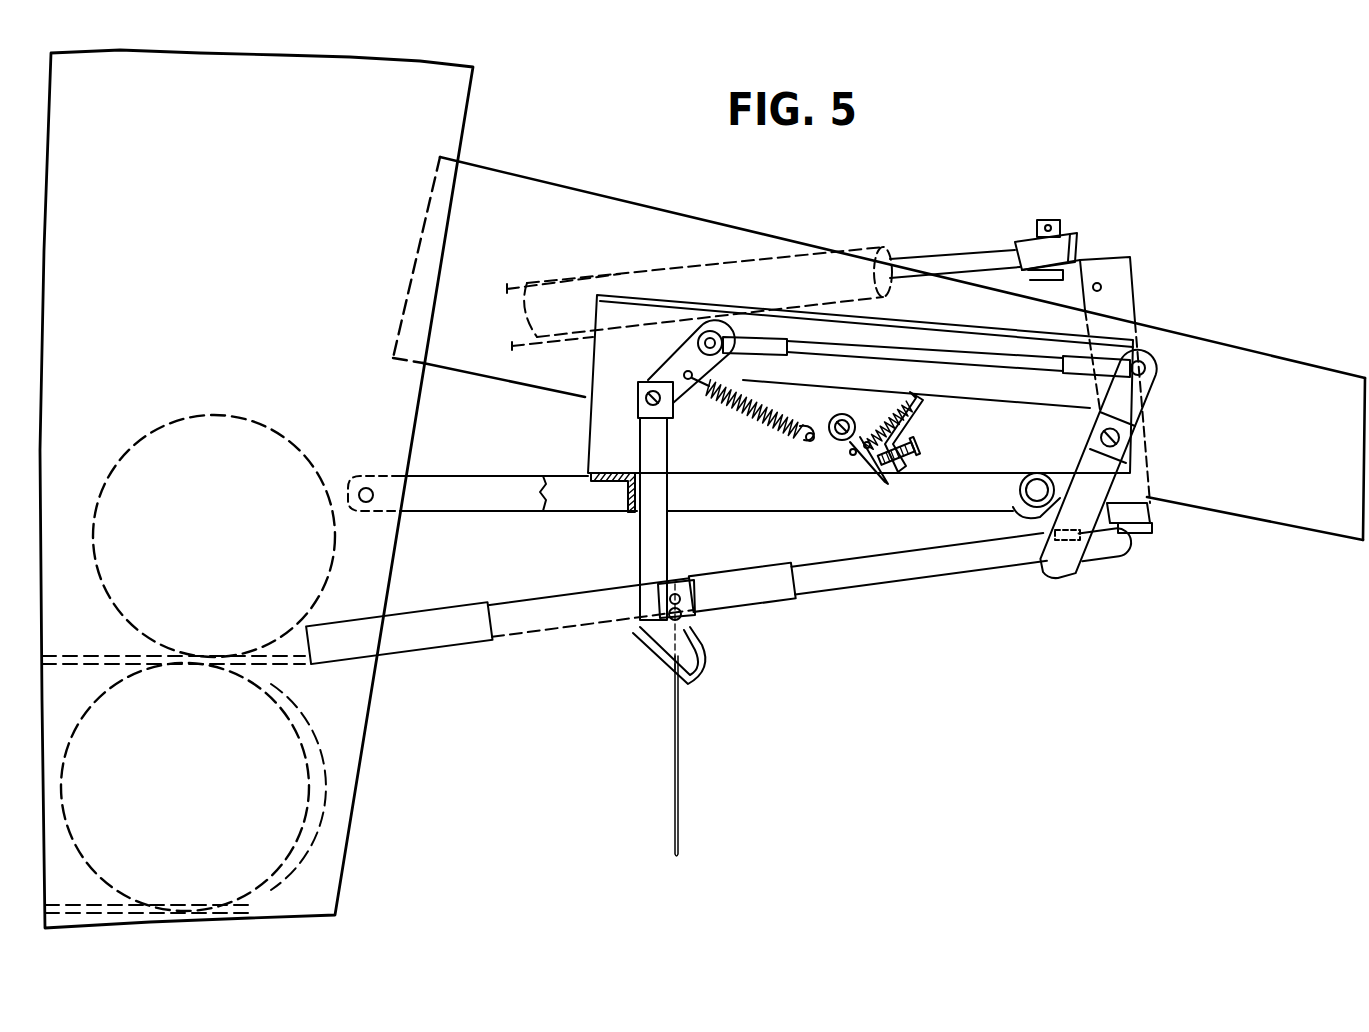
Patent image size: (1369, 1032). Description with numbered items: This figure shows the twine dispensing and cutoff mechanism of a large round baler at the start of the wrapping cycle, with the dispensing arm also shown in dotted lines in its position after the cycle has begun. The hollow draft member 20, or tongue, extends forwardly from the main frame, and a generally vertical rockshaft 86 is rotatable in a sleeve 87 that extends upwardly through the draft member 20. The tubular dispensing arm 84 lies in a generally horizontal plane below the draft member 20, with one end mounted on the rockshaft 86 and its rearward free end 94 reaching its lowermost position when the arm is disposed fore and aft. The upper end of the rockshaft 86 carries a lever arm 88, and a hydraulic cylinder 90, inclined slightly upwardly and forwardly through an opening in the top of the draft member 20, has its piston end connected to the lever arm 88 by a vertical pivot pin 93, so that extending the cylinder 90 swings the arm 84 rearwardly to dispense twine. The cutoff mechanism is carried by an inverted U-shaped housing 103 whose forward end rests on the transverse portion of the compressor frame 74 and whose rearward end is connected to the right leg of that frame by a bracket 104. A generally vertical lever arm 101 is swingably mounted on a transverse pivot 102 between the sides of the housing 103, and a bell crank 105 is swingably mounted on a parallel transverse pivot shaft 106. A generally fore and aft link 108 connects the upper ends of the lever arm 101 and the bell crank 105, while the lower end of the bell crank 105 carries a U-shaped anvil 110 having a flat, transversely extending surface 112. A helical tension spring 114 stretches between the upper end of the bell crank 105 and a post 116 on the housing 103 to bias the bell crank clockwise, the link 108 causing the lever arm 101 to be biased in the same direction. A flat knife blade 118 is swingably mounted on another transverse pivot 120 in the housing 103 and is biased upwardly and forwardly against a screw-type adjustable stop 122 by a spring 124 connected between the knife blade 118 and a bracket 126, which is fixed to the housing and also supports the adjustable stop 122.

The draft member 20 is at (1240, 363).
The compressor frame 74 is at (803, 500).
The dispensing arm 84 is at (862, 585).
The rockshaft 86 is at (1150, 515).
The sleeve 87 is at (1130, 303).
The lever arm 88 is at (1033, 279).
The hydraulic cylinder 90 is at (870, 247).
The vertical pivot pin 93 is at (1045, 218).
The free end of the arm 94 is at (677, 584).
The lever arm 101 is at (1052, 556).
The transverse pivot 102 is at (1125, 438).
The housing 103 is at (597, 435).
The bracket 104 is at (612, 490).
The bell crank 105 is at (658, 443).
The pivot shaft 106 is at (661, 403).
The link 108 is at (962, 358).
The anvil 110 is at (657, 655).
The surface 112 is at (700, 641).
The tension spring 114 is at (763, 402).
The post 116 is at (803, 443).
The knife blade 118 is at (865, 462).
The transverse pivot 120 is at (839, 414).
The adjustable stop 122 is at (918, 450).
The spring 124 is at (893, 418).
The bracket 126 is at (925, 418).